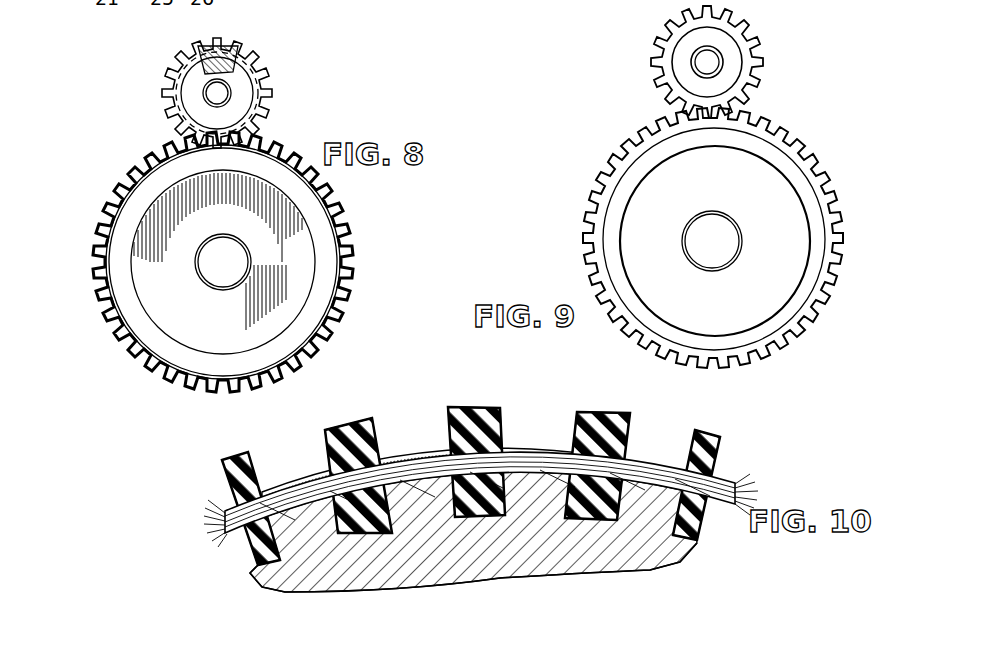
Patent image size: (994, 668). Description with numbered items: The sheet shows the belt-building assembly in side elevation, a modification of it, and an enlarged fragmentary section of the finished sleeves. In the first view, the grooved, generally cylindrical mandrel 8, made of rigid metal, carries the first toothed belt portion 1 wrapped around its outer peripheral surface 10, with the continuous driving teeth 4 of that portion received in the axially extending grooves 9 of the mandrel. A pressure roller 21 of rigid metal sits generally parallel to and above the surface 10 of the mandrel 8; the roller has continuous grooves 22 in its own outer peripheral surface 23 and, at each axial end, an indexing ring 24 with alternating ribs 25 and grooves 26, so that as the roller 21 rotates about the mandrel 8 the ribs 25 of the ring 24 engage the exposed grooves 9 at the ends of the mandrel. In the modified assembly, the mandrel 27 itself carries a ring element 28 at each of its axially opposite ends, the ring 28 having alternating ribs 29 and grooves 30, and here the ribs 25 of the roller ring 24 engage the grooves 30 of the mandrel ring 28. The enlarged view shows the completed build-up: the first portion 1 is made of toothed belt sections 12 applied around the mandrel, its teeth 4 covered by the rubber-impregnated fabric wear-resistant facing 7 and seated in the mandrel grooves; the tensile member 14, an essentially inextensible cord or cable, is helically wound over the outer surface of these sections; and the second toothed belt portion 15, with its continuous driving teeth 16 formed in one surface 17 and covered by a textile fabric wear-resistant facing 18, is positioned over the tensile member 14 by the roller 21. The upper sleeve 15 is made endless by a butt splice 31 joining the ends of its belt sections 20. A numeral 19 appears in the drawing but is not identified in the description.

In FIG. 10, the belt portion 1 is at (260, 540).
In FIG. 8, the driving teeth 4 is at (136, 166).
In FIG. 10, the driving teeth 4 is at (489, 489).
In FIG. 10, the wear-resistant facing 7 is at (705, 542).
In FIG. 8, the mandrel 8 is at (158, 333).
In FIG. 10, the mandrel 8 is at (290, 577).
In FIG. 8, the grooves 9 is at (268, 363).
In FIG. 8, the outer peripheral surface 10 is at (278, 150).
In FIG. 10, the toothed belt sections 12 is at (363, 537).
In FIG. 8, the tensile member 14 is at (330, 205).
In FIG. 10, the tensile member 14 is at (228, 508).
In FIG. 8, the second toothed belt portion 15 is at (350, 263).
In FIG. 10, the second toothed belt portion 15 is at (224, 470).
In FIG. 8, the driving teeth 16 is at (345, 283).
In FIG. 10, the driving teeth 16 is at (590, 412).
In FIG. 8, the surface 17 is at (345, 308).
In FIG. 10, the wear-resistant facing 18 is at (728, 442).
In FIG. 8, the tooth 19 is at (225, 47).
In FIG. 8, the belt sections 20 is at (232, 47).
In FIG. 10, the belt sections 20 is at (708, 432).
In FIG. 8, the pressure roller 21 is at (163, 73).
In FIG. 9, the pressure roller 21 is at (668, 22).
In FIG. 8, the grooves 22 is at (200, 55).
In FIG. 8, the outer peripheral surface 23 is at (172, 88).
In FIG. 8, the ring 24 is at (268, 100).
In FIG. 9, the ring 24 is at (752, 40).
In FIG. 8, the ribs 25 is at (268, 68).
In FIG. 9, the ribs 25 is at (655, 52).
In FIG. 8, the grooves 26 is at (268, 88).
In FIG. 9, the grooves 26 is at (663, 85).
In FIG. 9, the mandrel 27 is at (795, 303).
In FIG. 9, the ring element 28 is at (627, 148).
In FIG. 9, the ribs 29 is at (608, 160).
In FIG. 9, the grooves 30 is at (603, 207).
In FIG. 10, the butt splice 31 is at (415, 452).